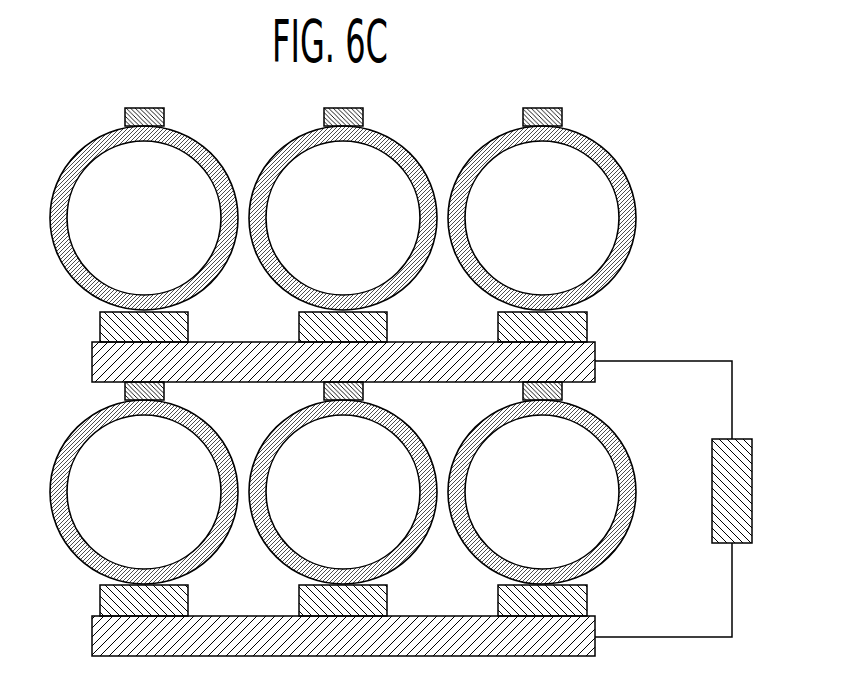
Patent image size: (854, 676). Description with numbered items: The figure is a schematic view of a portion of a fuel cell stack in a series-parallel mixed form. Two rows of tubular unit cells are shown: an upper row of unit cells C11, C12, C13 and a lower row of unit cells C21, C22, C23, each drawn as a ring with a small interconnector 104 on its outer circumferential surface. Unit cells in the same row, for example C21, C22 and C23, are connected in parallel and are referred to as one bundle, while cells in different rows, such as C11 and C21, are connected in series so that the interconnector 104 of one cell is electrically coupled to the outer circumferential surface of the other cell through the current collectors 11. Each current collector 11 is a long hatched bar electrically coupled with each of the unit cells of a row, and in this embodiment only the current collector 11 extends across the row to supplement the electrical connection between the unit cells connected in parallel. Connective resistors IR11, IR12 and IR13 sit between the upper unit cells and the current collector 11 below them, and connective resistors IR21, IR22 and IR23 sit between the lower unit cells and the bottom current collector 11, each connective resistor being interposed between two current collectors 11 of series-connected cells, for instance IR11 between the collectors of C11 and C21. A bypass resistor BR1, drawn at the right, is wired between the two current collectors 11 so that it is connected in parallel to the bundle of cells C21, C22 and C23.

The interconnector 104 is at (124, 114).
The current collector 11 is at (92, 353).
The unit cell C11 is at (183, 143).
The unit cell C12 is at (382, 143).
The unit cell C13 is at (581, 143).
The unit cell C21 is at (185, 418).
The unit cell C22 is at (383, 418).
The unit cell C23 is at (582, 418).
The connective resistor IR11 is at (168, 324).
The connective resistor IR12 is at (369, 324).
The connective resistor IR13 is at (567, 324).
The connective resistor IR21 is at (168, 597).
The connective resistor IR22 is at (369, 597).
The connective resistor IR23 is at (568, 597).
The bypass resistor BR1 is at (720, 473).